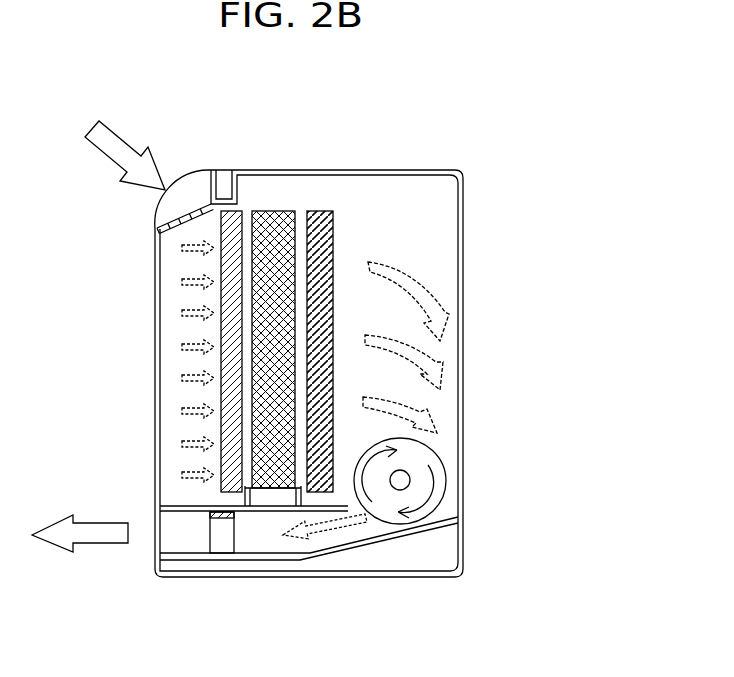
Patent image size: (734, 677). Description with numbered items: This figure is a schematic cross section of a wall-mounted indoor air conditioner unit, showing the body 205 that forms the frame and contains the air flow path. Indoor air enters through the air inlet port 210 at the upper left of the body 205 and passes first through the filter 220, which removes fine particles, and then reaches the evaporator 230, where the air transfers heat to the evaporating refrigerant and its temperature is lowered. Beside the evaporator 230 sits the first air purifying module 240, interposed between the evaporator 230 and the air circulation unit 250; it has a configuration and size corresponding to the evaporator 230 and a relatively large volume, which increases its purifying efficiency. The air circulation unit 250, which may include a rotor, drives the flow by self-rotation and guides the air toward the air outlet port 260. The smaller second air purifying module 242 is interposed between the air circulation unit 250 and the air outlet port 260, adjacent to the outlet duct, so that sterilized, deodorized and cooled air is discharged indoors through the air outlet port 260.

The body 205 is at (462, 233).
The air inlet port 210 is at (199, 192).
The filter 220 is at (228, 197).
The evaporator 230 is at (270, 222).
The first air purifying module 240 is at (323, 226).
The second air purifying module 242 is at (222, 542).
The air circulation unit 250 is at (430, 458).
The air outlet port 260 is at (168, 532).